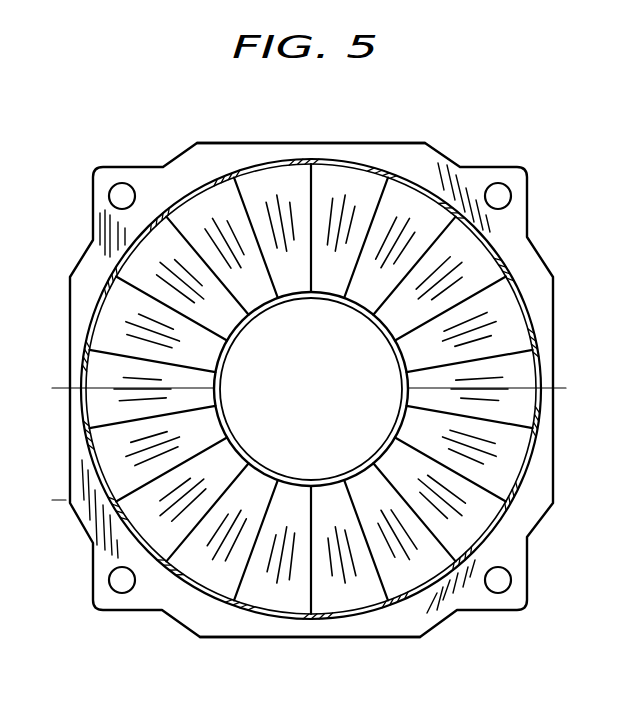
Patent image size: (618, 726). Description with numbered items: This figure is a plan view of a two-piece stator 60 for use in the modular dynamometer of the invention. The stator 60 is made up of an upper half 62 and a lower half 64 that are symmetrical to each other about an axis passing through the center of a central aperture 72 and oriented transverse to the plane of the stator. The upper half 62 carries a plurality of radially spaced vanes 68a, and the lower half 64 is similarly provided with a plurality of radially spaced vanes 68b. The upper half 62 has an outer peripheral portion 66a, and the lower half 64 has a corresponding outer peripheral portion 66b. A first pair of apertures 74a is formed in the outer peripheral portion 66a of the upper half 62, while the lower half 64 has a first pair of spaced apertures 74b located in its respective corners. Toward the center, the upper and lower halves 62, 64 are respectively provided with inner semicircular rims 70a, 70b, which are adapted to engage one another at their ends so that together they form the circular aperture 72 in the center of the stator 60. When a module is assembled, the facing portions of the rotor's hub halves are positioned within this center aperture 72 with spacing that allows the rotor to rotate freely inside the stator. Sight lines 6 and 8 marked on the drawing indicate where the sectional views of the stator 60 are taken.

The stator 60 is at (74, 172).
The upper half 62 is at (241, 138).
The lower half 64 is at (204, 645).
The outer peripheral portion 66a is at (447, 167).
The outer peripheral portion 66b is at (428, 622).
The vanes 68a is at (390, 198).
The vanes 68b is at (393, 573).
The inner semicircular rim 70a is at (281, 306).
The inner semicircular rim 70b is at (271, 473).
The aperture 72 is at (327, 389).
The apertures 74a is at (128, 192).
The apertures 74b is at (127, 595).
The sight line 6— 6 is at (308, 80).
The sight line 8— 8 is at (227, 523).